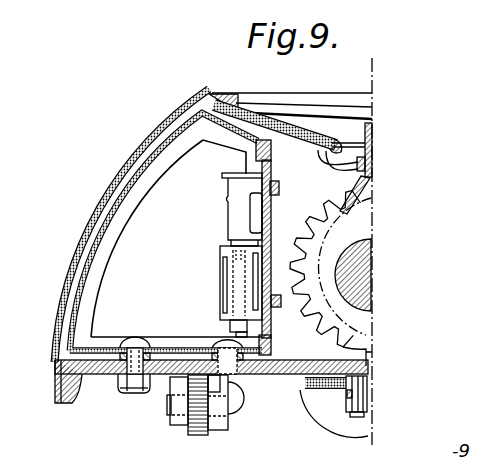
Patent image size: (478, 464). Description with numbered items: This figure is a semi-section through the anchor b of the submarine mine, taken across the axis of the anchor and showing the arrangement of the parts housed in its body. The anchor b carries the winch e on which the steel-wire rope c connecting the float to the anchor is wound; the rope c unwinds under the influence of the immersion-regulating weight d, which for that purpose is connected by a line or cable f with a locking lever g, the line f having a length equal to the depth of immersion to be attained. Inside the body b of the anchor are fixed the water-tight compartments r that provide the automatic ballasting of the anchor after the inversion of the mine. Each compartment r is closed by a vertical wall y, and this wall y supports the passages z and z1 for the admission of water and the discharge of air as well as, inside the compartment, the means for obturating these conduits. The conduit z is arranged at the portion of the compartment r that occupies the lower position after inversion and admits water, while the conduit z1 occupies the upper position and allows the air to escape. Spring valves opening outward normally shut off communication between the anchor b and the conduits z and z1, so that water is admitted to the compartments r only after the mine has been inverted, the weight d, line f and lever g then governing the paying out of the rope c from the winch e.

The anchor b is at (160, 131).
The water-tight compartment r is at (120, 193).
The vertical wall y is at (279, 212).
The conduit for discharge of air z1 is at (280, 192).
The conduit for admission of water z is at (280, 304).
The rope c is at (348, 192).
The winch e is at (357, 257).
The line f is at (312, 393).
The locking lever g is at (370, 393).
The weight d is at (343, 417).